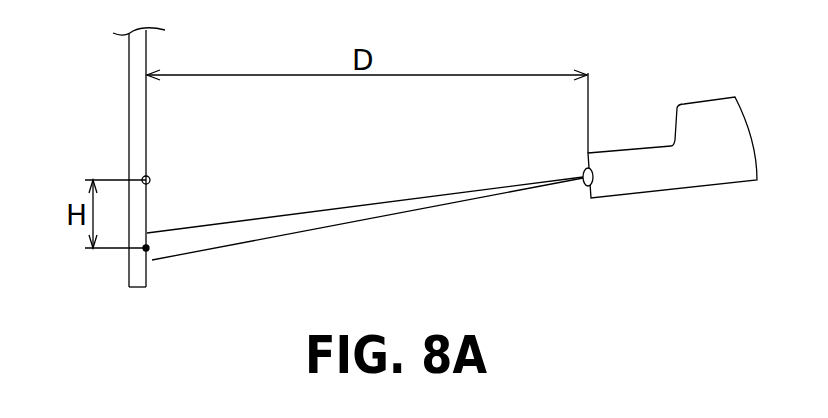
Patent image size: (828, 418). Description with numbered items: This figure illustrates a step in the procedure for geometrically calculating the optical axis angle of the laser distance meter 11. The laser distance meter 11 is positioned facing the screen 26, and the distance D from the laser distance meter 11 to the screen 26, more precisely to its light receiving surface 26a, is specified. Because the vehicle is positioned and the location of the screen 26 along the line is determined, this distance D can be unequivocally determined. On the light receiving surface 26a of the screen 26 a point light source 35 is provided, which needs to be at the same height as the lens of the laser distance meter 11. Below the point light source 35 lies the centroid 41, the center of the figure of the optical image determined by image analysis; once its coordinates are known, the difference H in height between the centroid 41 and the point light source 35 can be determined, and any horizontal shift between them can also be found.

The screen 26 is at (137, 131).
The light receiving surface 26a is at (148, 123).
The point light source 35 is at (151, 179).
The centroid 41 is at (150, 250).
The laser distance meter 11 is at (671, 178).